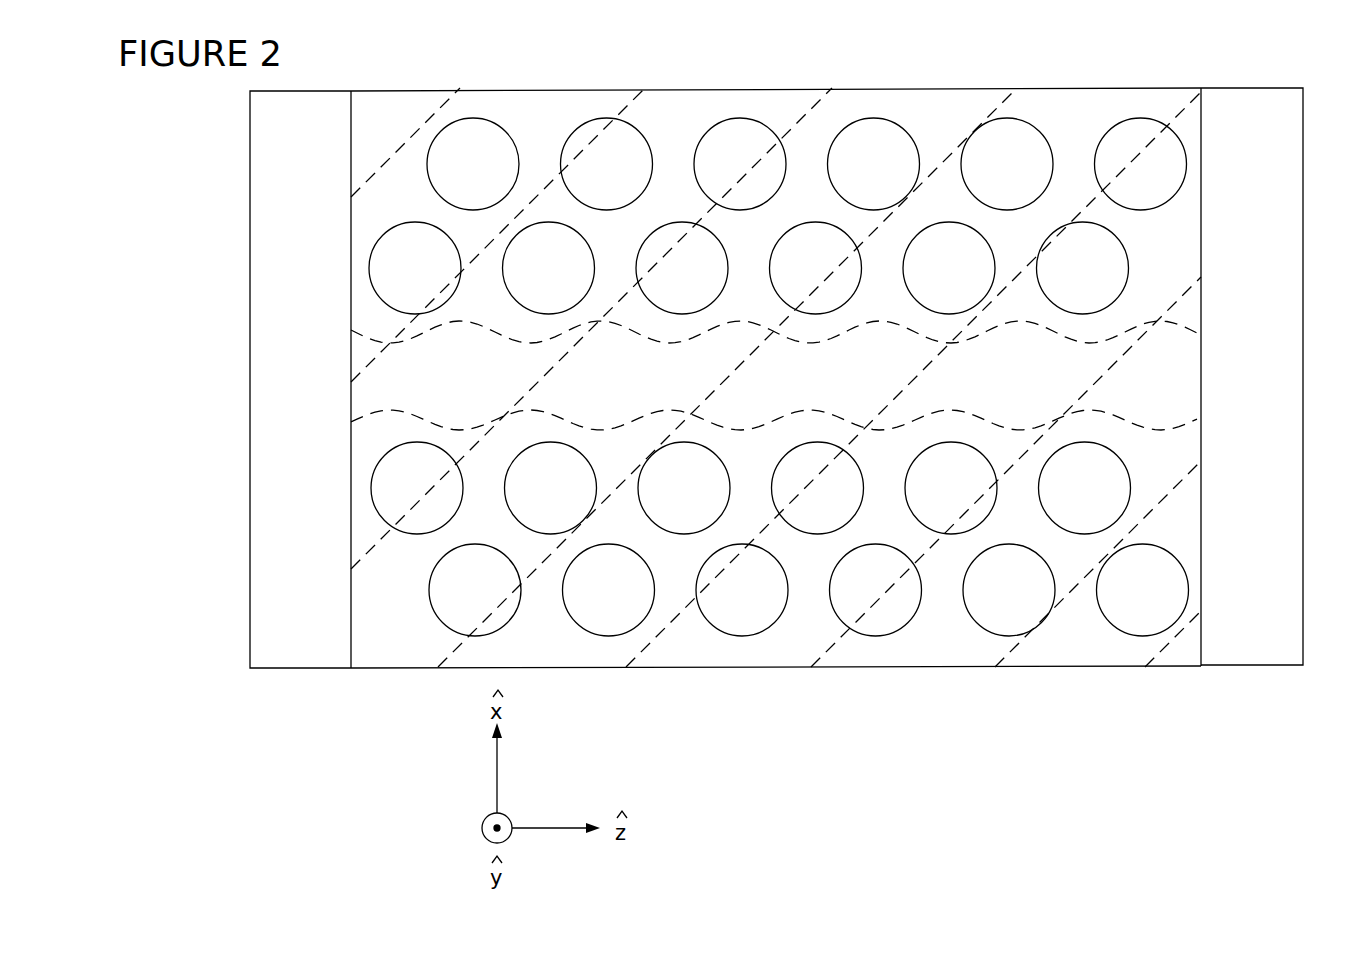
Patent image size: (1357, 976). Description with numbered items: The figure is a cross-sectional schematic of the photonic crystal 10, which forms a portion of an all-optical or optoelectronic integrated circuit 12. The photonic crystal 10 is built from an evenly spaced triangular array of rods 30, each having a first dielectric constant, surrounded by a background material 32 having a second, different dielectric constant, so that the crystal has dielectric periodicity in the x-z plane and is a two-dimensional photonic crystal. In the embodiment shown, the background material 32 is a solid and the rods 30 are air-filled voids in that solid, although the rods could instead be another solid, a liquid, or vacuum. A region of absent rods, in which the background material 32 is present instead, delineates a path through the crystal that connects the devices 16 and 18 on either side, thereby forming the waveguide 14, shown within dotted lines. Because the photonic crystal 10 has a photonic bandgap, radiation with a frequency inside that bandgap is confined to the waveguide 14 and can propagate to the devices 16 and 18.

The photonic crystal 10 is at (768, 428).
The integrated circuit 12 is at (776, 428).
The waveguide 14 is at (818, 381).
The device 16 is at (276, 299).
The device 18 is at (1258, 274).
The rods 30 is at (1023, 140).
The background material 32 is at (820, 125).